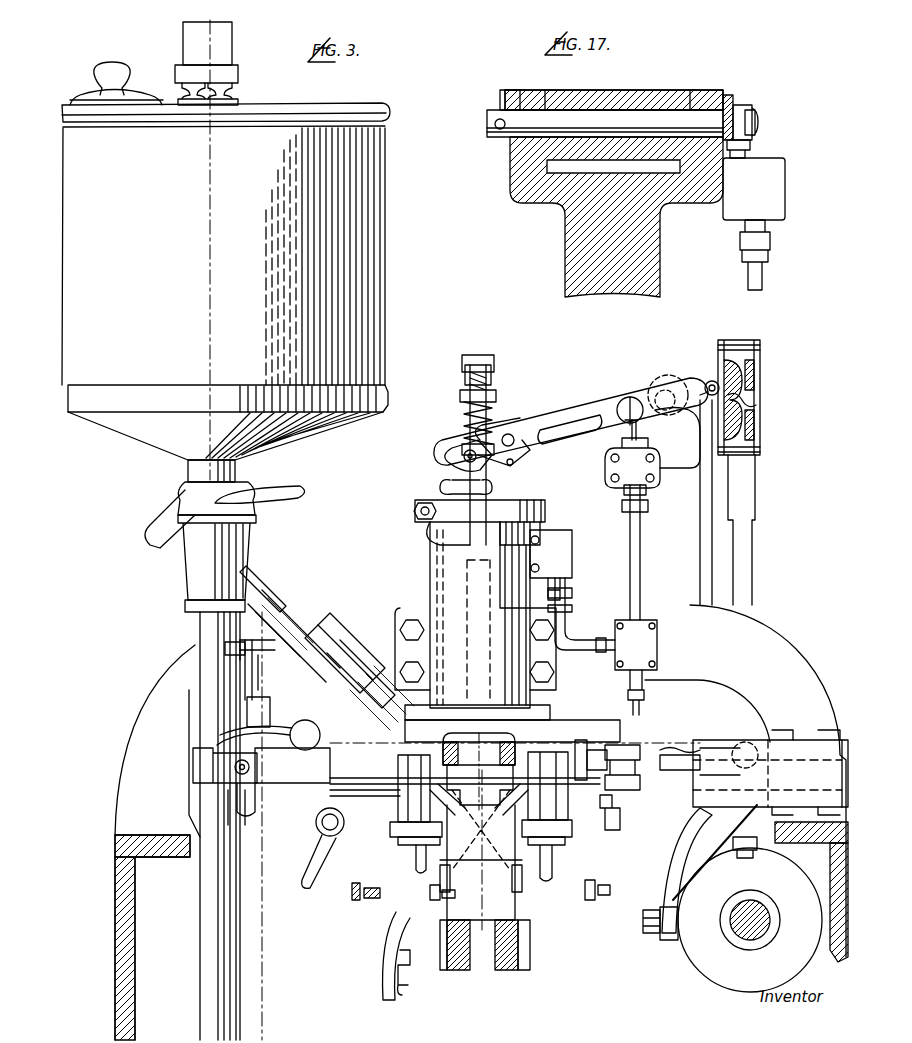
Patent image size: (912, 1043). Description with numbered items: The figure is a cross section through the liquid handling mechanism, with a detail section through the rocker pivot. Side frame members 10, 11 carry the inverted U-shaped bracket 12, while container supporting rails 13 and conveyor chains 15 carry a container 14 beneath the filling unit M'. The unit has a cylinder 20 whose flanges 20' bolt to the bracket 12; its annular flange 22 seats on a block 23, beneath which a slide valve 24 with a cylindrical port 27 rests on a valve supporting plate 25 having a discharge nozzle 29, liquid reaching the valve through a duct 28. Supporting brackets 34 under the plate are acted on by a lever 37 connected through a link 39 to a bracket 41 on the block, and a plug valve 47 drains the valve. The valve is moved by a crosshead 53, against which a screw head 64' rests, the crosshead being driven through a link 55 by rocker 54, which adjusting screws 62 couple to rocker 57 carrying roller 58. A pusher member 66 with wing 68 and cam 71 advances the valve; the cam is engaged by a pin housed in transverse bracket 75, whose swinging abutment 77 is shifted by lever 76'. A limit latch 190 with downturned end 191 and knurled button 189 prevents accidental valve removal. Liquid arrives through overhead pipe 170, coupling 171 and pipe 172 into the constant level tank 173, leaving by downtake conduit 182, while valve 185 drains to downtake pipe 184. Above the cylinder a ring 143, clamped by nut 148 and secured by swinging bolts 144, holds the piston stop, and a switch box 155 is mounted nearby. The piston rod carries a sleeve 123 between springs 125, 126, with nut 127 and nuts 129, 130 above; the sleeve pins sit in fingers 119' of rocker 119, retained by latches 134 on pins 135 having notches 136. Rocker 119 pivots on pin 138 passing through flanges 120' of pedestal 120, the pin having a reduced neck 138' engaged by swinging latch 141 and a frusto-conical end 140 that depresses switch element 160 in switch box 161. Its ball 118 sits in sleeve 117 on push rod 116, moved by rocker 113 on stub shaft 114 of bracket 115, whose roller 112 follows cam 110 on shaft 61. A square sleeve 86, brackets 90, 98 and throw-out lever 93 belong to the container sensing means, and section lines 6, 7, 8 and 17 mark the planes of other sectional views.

In FIG. 3, the inverted U-shaped bracket 12 is at (210, 60).
In FIG. 3, the overhead pipe 170 is at (220, 47).
In FIG. 3, the coupling 171 is at (238, 75).
In FIG. 3, the pipe 172 is at (235, 92).
In FIG. 3, the constant level tank 173 is at (370, 170).
In FIG. 3, the downtake conduit 182 is at (240, 472).
In FIG. 3, the valve 185 is at (232, 552).
In FIG. 3, the downtake pipe 184 is at (210, 905).
In FIG. 3, the conduit 28 is at (305, 625).
In FIG. 3, the knurled operating button 189 is at (359, 671).
In FIG. 3, the swinging abutment 77 is at (263, 630).
In FIG. 3, the lever 76' is at (187, 650).
In FIG. 3, the transverse bracket member 75 is at (225, 700).
In FIG. 3, the cam 71 is at (244, 705).
In FIG. 3, the section line 8 is at (193, 642).
In FIG. 3, the latch 190 is at (268, 726).
In FIG. 3, the downturned end 191 is at (270, 760).
In FIG. 3, the pusher member 66 is at (215, 780).
In FIG. 3, the wing 68 is at (240, 820).
In FIG. 3, the side frame member 10 is at (115, 880).
In FIG. 3, the section line 6 is at (215, 745).
In FIG. 3, the cylinder 20 is at (464, 615).
In FIG. 3, the flanges 20' is at (457, 639).
In FIG. 3, the filling unit M' is at (389, 547).
In FIG. 3, the section line 7 is at (480, 610).
In FIG. 3, the ring 143 is at (498, 500).
In FIG. 3, the nut 148 is at (413, 511).
In FIG. 3, the swinging bolts 144 is at (430, 528).
In FIG. 3, the switch box 155 is at (565, 540).
In FIG. 3, the spring 126 is at (450, 482).
In FIG. 3, the nut 127 is at (490, 395).
In FIG. 3, the locking nut 130 is at (459, 358).
In FIG. 3, the abutment nut 129 is at (465, 378).
In FIG. 3, the spring 125 is at (462, 405).
In FIG. 3, the sleeve 123 is at (462, 442).
In FIG. 3, the latches 134 is at (448, 460).
In FIG. 3, the pins 135 is at (500, 438).
In FIG. 3, the notches 136 is at (509, 445).
In FIG. 3, the rocker 119 is at (571, 419).
In FIG. 17, the rocker 119 is at (650, 70).
In FIG. 3, the fingers 119' is at (570, 436).
In FIG. 3, the pivot pin 138 is at (609, 384).
In FIG. 17, the pivot pin 138 is at (605, 97).
In FIG. 3, the swinging latch 141 is at (660, 392).
In FIG. 17, the swinging latch 141 is at (728, 100).
In FIG. 3, the flanges 120' is at (658, 368).
In FIG. 17, the flanges 120' is at (597, 80).
In FIG. 3, the section line 17 is at (640, 392).
In FIG. 3, the switch operating element 160 is at (650, 445).
In FIG. 17, the switch operating element 160 is at (752, 145).
In FIG. 3, the switch box 161 is at (655, 468).
In FIG. 17, the switch box 161 is at (773, 200).
In FIG. 3, the ball 118 is at (760, 385).
In FIG. 3, the sleeve 117 is at (760, 420).
In FIG. 3, the push rod 116 is at (755, 562).
In FIG. 3, the pedestal 120 is at (749, 498).
In FIG. 17, the pedestal 120 is at (616, 217).
In FIG. 3, the crosshead 53 is at (640, 720).
In FIG. 3, the rocker 54 is at (678, 748).
In FIG. 3, the slide valve 24 is at (515, 763).
In FIG. 3, the annular flange 22 is at (550, 718).
In FIG. 3, the block 23 is at (585, 735).
In FIG. 3, the cylindrical port 27 is at (470, 735).
In FIG. 3, the bracket 41 is at (398, 772).
In FIG. 3, the valve supporting plate 25 is at (330, 793).
In FIG. 3, the link 39 is at (420, 795).
In FIG. 3, the plug valve 47 is at (316, 822).
In FIG. 3, the supporting bracket 34 is at (390, 835).
In FIG. 3, the lever 37 is at (400, 850).
In FIG. 3, the sleeve 86 is at (415, 868).
In FIG. 3, the conveyor chains 15 is at (415, 880).
In FIG. 3, the discharge nozzle 29 is at (500, 855).
In FIG. 3, the container 14 is at (525, 880).
In FIG. 3, the bracket 98 is at (458, 970).
In FIG. 3, the container supporting rails 13 is at (505, 968).
In FIG. 3, the bracket 90 is at (385, 955).
In FIG. 3, the throw-out lever 93 is at (385, 960).
In FIG. 3, the stop 64' is at (571, 760).
In FIG. 3, the link 55 is at (665, 765).
In FIG. 3, the rocker 57 is at (660, 795).
In FIG. 3, the adjusting screws 62 is at (625, 828).
In FIG. 3, the stub shaft 114 is at (770, 752).
In FIG. 3, the securing bracket 115 is at (800, 740).
In FIG. 3, the roller 58 is at (745, 858).
In FIG. 3, the cam 110 is at (700, 960).
In FIG. 3, the rotary shaft 61 is at (745, 935).
In FIG. 3, the rocker 113 is at (660, 885).
In FIG. 3, the roller 112 is at (668, 940).
In FIG. 3, the side frame member 11 is at (830, 958).
In FIG. 17, the neck 138' is at (769, 114).
In FIG. 17, the frusto-conical end portion 140 is at (758, 122).